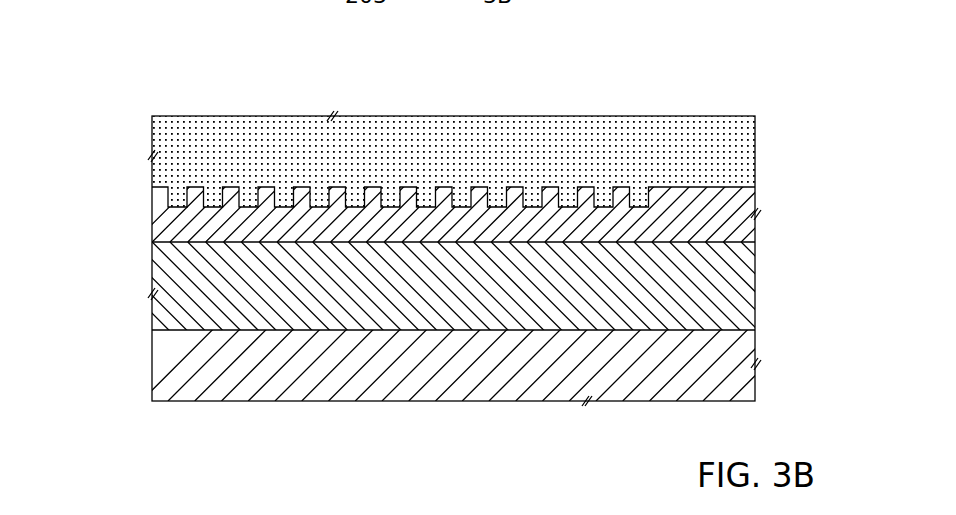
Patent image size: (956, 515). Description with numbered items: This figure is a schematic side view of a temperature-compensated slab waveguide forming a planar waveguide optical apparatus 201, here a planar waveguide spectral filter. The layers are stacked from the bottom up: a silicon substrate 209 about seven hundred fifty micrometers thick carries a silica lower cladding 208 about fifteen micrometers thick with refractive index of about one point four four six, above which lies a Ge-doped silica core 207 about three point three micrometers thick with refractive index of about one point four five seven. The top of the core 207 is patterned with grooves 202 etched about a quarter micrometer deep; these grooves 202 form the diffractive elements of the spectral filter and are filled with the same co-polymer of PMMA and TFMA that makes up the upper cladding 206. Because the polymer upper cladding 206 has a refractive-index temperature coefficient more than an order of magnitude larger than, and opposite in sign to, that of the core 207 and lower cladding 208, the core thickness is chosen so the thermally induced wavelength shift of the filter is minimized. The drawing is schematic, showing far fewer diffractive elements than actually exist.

The planar waveguide optical apparatus 201 is at (140, 90).
The grooves 202 is at (285, 198).
The upper cladding 206 is at (729, 159).
The core 207 is at (165, 225).
The lower cladding 208 is at (720, 303).
The silicon substrate 209 is at (190, 372).